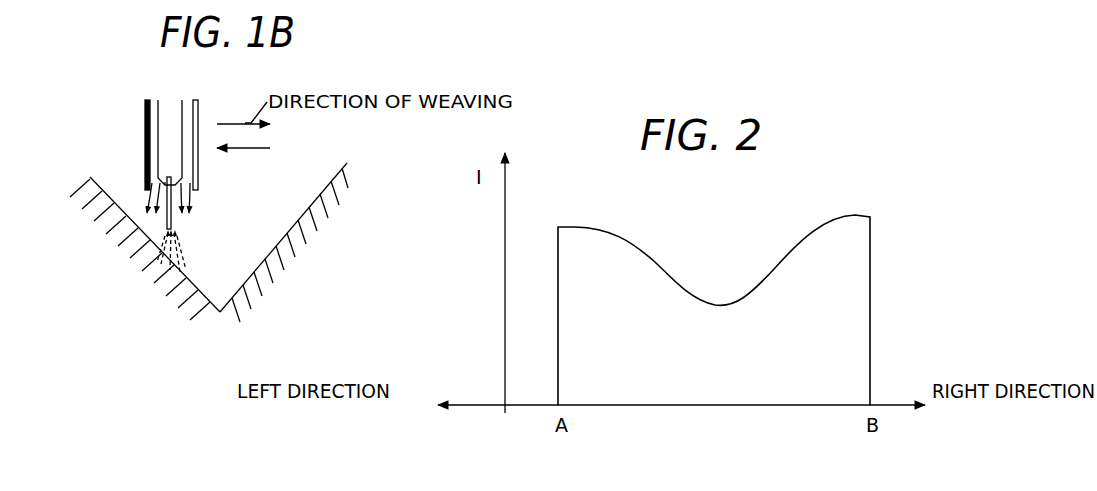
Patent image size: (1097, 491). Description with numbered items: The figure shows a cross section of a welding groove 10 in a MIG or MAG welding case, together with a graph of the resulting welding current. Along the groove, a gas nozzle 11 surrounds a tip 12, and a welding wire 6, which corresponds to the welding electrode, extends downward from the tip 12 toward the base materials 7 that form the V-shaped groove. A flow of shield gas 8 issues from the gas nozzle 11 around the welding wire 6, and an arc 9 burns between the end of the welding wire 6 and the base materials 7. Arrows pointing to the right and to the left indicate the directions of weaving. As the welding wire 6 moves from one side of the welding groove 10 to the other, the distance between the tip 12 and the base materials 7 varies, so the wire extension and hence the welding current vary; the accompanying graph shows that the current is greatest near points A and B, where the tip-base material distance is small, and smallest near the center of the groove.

The welding wire 6 is at (172, 222).
The base materials 7 is at (227, 242).
The flow of a shield gas 8 is at (190, 198).
The arc 9 is at (180, 257).
The welding groove 10 is at (257, 247).
The gas nozzle 11 is at (148, 115).
The tip 12 is at (175, 122).